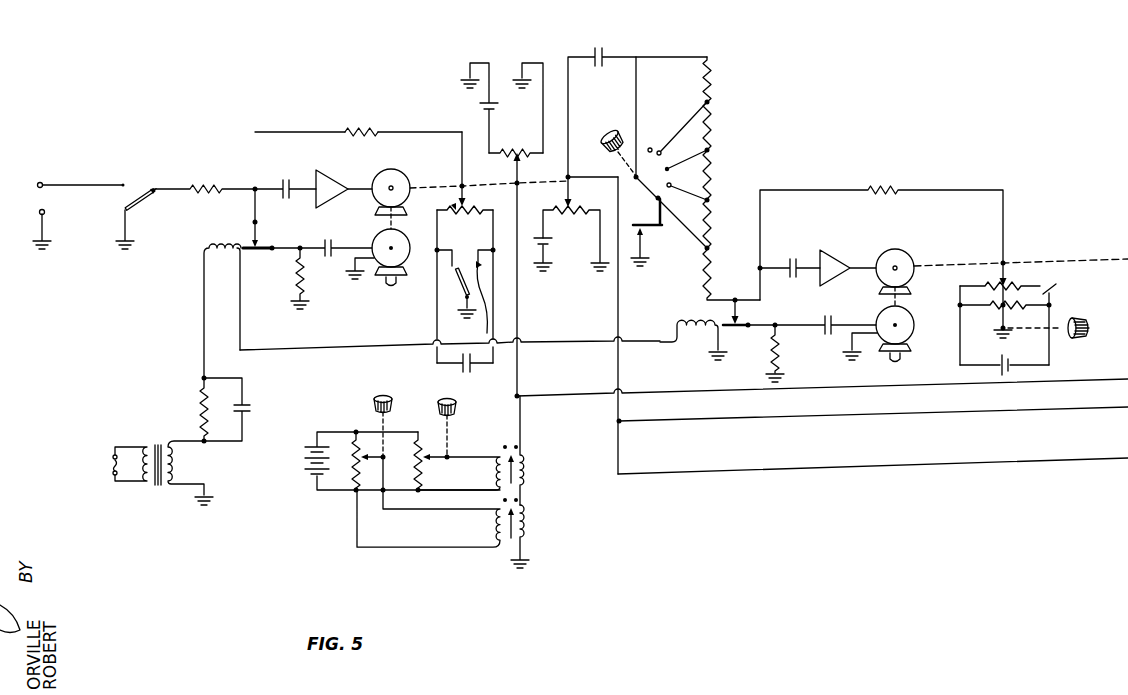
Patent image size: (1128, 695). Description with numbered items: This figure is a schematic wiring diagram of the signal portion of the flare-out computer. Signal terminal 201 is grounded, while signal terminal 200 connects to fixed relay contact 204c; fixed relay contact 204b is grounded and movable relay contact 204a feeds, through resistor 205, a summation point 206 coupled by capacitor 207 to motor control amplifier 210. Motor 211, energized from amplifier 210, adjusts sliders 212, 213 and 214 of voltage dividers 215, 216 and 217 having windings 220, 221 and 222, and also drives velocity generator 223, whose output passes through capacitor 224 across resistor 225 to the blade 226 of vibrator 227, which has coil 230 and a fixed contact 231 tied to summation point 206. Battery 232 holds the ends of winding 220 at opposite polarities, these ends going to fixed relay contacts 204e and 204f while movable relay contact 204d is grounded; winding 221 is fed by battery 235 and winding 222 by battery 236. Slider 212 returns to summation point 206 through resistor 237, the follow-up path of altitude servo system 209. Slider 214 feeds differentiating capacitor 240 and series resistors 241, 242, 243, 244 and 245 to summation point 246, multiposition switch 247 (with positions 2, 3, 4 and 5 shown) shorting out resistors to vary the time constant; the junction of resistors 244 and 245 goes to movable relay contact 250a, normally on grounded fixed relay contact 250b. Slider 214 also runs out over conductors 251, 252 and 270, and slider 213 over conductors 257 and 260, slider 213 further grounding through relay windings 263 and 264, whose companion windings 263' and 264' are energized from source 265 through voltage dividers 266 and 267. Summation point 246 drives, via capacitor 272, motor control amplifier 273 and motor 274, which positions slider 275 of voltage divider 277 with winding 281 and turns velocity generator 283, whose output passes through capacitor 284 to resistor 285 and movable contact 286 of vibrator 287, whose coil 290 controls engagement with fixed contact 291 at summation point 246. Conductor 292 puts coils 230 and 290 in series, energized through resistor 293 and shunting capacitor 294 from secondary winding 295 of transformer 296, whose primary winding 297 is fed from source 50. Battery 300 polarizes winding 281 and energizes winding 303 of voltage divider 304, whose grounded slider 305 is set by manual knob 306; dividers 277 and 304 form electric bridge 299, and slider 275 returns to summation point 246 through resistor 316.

The signal terminal 200 is at (38, 185).
The signal terminal 201 is at (40, 214).
The movable relay contact 204a is at (121, 202).
The fixed relay contact 204b is at (122, 212).
The fixed relay contact 204c is at (123, 185).
The movable relay contact 204d is at (455, 285).
The fixed relay contact 204e is at (466, 249).
The fixed relay contact 204f is at (469, 295).
The resistor 205 is at (190, 188).
The summation point 206 is at (253, 188).
The capacitor 207 is at (284, 184).
The altitude servo system 209 is at (373, 122).
The motor control amplifier 210 is at (318, 170).
The motor 211 is at (374, 172).
The slider 212 is at (470, 188).
The slider 213 is at (521, 180).
The slider 214 is at (575, 200).
The voltage divider 215 is at (454, 208).
The voltage divider 216 is at (515, 164).
The voltage divider 217 is at (564, 204).
The winding 220 is at (450, 216).
The winding 221 is at (509, 148).
The winding 222 is at (545, 232).
The velocity generator 223 is at (378, 236).
The capacitor 224 is at (324, 240).
The resistor 225 is at (306, 286).
The blade 226 is at (251, 249).
The vibrator 227 is at (248, 246).
The coil 230 is at (202, 246).
The fixed contact 231 is at (260, 221).
The battery 232 is at (468, 369).
The battery 235 is at (486, 105).
The battery 236 is at (548, 242).
The resistor 237 is at (342, 130).
The differentiating capacitor 240 is at (591, 48).
The resistor 241 is at (712, 75).
The resistor 242 is at (712, 124).
The resistor 243 is at (712, 174).
The resistor 244 is at (712, 224).
The resistor 245 is at (721, 266).
The summation point 246 is at (759, 267).
The multiposition switch 247 is at (644, 160).
The switch position 2 is at (686, 195).
The switch position 3 is at (686, 167).
The switch position 4 is at (682, 132).
The switch position 5 is at (655, 141).
The movable relay contact 250a is at (632, 224).
The fixed relay contact 250b is at (642, 237).
The conductor 251 is at (621, 368).
The conductor 252 is at (674, 420).
The conductor 257 is at (517, 285).
The conductor 260 is at (556, 395).
The relay winding 263 is at (540, 450).
The second relay winding 263' is at (459, 473).
The relay winding 264 is at (540, 533).
The second relay winding 264' is at (428, 502).
The source 265 is at (310, 470).
The voltage divider 266 is at (432, 436).
The voltage divider 267 is at (360, 440).
The conductor 270 is at (648, 474).
The capacitor 272 is at (797, 258).
The motor control amplifier 273 is at (826, 261).
The motor 274 is at (902, 258).
The slider 275 is at (1013, 264).
The voltage divider 277 is at (998, 281).
The winding 281 is at (982, 286).
The velocity generator 283 is at (908, 324).
The capacitor 284 is at (824, 327).
The resistor 285 is at (768, 367).
The movable contact 286 is at (766, 348).
The vibrator 287 is at (722, 321).
The coil 290 is at (702, 342).
The fixed contact 291 is at (740, 318).
The conductor 292 is at (547, 341).
The resistor 293 is at (200, 406).
The shunting capacitor 294 is at (245, 406).
The secondary winding 295 is at (175, 463).
The transformer 296 is at (157, 444).
The primary winding 297 is at (141, 481).
The electric bridge 299 is at (1051, 293).
The battery 300 is at (1000, 365).
The winding 303 is at (998, 304).
The voltage divider 304 is at (1007, 309).
The slider 305 is at (1002, 322).
The manual knob 306 is at (1076, 319).
The resistor 316 is at (868, 188).
The source 50 is at (111, 462).